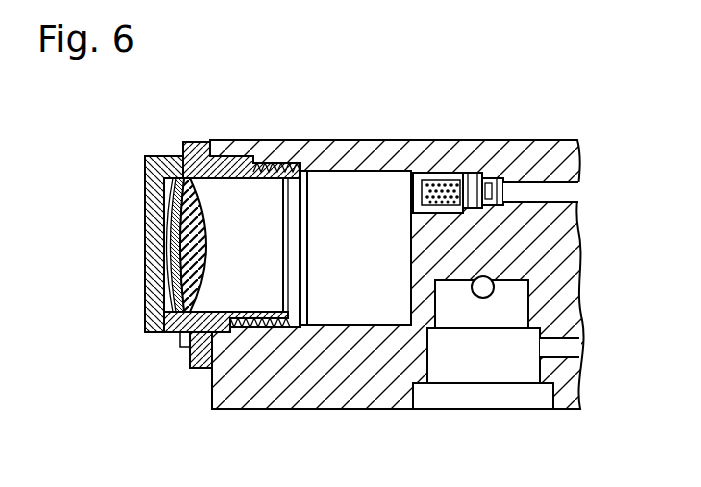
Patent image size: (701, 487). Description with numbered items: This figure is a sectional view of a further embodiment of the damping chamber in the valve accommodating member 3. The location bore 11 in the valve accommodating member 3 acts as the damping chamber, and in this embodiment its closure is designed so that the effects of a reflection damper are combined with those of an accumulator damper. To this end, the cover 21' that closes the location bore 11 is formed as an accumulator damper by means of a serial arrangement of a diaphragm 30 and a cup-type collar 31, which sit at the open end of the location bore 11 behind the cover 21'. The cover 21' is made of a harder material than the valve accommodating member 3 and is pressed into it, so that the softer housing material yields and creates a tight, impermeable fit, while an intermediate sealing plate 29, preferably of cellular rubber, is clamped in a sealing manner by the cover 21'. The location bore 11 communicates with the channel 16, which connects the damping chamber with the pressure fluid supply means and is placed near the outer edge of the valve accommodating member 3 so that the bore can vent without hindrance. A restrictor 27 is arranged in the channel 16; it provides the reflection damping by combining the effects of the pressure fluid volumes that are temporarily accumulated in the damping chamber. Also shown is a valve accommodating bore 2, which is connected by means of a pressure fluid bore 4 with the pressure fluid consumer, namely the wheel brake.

The valve accommodating bore 2 is at (433, 357).
The valve accommodating member 3 is at (243, 378).
The pressure fluid bore 4 is at (567, 350).
The location bore 11 is at (355, 315).
The channel 16 is at (557, 193).
The cover 21' is at (131, 241).
The restrictor 27 is at (509, 190).
The sealing plate 29 is at (210, 367).
The diaphragm 30 is at (174, 180).
The cup-type collar 31 is at (214, 172).